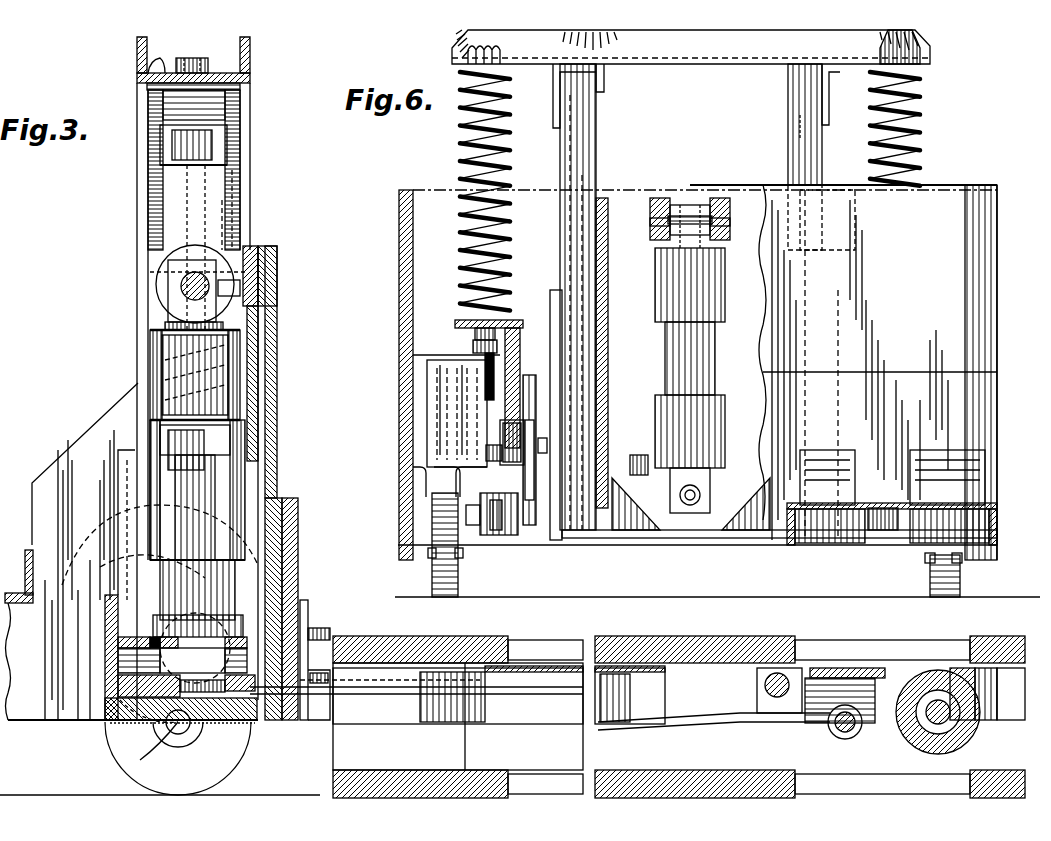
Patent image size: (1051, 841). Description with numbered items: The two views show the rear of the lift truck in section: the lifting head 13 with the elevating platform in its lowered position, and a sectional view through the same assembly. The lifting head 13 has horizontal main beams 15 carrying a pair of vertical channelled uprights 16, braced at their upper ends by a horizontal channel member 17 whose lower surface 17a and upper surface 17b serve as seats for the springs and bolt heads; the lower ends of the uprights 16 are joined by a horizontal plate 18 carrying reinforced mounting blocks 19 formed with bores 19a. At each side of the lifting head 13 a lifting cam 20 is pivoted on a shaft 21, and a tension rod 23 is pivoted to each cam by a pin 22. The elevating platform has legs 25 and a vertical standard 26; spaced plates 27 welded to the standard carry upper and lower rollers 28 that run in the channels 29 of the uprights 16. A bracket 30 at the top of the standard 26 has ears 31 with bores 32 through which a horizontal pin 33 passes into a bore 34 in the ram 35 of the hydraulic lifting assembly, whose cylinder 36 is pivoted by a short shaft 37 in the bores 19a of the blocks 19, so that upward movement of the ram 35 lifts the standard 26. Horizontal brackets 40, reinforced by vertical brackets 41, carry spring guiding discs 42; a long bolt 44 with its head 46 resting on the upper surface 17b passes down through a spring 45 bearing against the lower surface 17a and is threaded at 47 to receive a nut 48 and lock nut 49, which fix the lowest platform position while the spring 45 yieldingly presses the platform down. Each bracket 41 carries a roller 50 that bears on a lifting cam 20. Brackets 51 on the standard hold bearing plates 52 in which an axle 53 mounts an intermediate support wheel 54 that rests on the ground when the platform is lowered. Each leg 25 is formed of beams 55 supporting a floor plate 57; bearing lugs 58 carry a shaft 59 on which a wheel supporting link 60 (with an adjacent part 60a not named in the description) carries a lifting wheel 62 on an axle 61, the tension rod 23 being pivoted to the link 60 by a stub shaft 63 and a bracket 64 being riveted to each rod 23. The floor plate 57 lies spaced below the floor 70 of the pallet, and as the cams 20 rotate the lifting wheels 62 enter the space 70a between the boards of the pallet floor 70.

In FIG. 3, the lifting head 13 is at (22, 722).
In FIG. 6, the lifting head 13 is at (576, 540).
In FIG. 6, the main beams 15 is at (552, 290).
In FIG. 3, the vertical channelled uprights 16 is at (137, 224).
In FIG. 6, the vertical channelled uprights 16 is at (598, 129).
In FIG. 3, the horizontal channel member 17 is at (250, 47).
In FIG. 6, the horizontal channel member 17 is at (722, 55).
In FIG. 3, the lower surface of beam 17a is at (252, 86).
In FIG. 6, the lower surface of beam 17a is at (527, 68).
In FIG. 3, the upper surface of channel beam 17b is at (137, 65).
In FIG. 6, the upper surface of channel beam 17b is at (530, 58).
In FIG. 3, the horizontal plate 18 is at (115, 721).
In FIG. 3, the mounting blocks 19 is at (165, 724).
In FIG. 6, the mounting blocks 19 is at (680, 512).
In FIG. 3, the bores 19a is at (120, 687).
In FIG. 6, the bores 19a is at (700, 512).
In FIG. 3, the lifting cam 20 is at (75, 558).
In FIG. 6, the lifting cam 20 is at (530, 376).
In FIG. 6, the shaft 21 is at (495, 460).
In FIG. 3, the pin 22 is at (308, 625).
In FIG. 6, the pin 22 is at (475, 506).
In FIG. 6, the tension rod 23 is at (508, 534).
In FIG. 6, the legs 25 is at (880, 503).
In FIG. 3, the vertical standard 26 is at (280, 460).
In FIG. 6, the vertical standard 26 is at (894, 245).
In FIG. 3, the spaced plates 27 is at (160, 277).
In FIG. 6, the spaced plates 27 is at (600, 322).
In FIG. 3, the rollers 28 is at (158, 262).
In FIG. 6, the rollers 28 is at (594, 181).
In FIG. 3, the channels 29 is at (238, 196).
In FIG. 6, the channels 29 is at (596, 147).
In FIG. 3, the bracket 30 is at (276, 272).
In FIG. 3, the ears 31 is at (240, 292).
In FIG. 6, the ears 31 is at (660, 198).
In FIG. 6, the bores 32 is at (650, 222).
In FIG. 3, the horizontal pin 33 is at (276, 256).
In FIG. 6, the horizontal pin 33 is at (728, 205).
In FIG. 6, the bore 34 is at (690, 205).
In FIG. 3, the ram 35 is at (230, 262).
In FIG. 6, the ram 35 is at (665, 257).
In FIG. 3, the cylinder 36 is at (250, 440).
In FIG. 6, the cylinder 36 is at (668, 358).
In FIG. 3, the short shaft 37 is at (118, 657).
In FIG. 6, the short shaft 37 is at (690, 515).
In FIG. 3, the horizontal brackets 40 is at (150, 394).
In FIG. 6, the horizontal brackets 40 is at (462, 321).
In FIG. 3, the vertical brackets 41 is at (130, 447).
In FIG. 6, the vertical brackets 41 is at (520, 331).
In FIG. 6, the spring guiding discs 42 is at (515, 318).
In FIG. 3, the long bolt 44 is at (228, 173).
In FIG. 6, the long bolt 44 is at (460, 163).
In FIG. 3, the spring 45 is at (155, 364).
In FIG. 6, the spring 45 is at (460, 131).
In FIG. 3, the head 46 is at (192, 58).
In FIG. 6, the head 46 is at (468, 56).
In FIG. 6, the threaded lower end 47 is at (485, 380).
In FIG. 6, the nut 48 is at (475, 336).
In FIG. 6, the lock nut 49 is at (478, 352).
In FIG. 3, the roller 50 is at (116, 561).
In FIG. 6, the roller 50 is at (512, 436).
In FIG. 6, the brackets 51 is at (420, 479).
In FIG. 3, the bearing plates 52 is at (170, 730).
In FIG. 6, the bearing plates 52 is at (448, 495).
In FIG. 3, the axle 53 is at (140, 760).
In FIG. 3, the intermediate support wheel 54 is at (248, 768).
In FIG. 6, the intermediate support wheel 54 is at (460, 583).
In FIG. 6, the beams 55 is at (662, 706).
In FIG. 6, the floor plate 57 is at (546, 666).
In FIG. 6, the bearing lugs 58 is at (756, 717).
In FIG. 6, the shaft 59 is at (776, 668).
In FIG. 6, the wheel supporting link 60 is at (888, 732).
In FIG. 6, the roller stop 60a is at (975, 668).
In FIG. 6, the axle 61 is at (978, 726).
In FIG. 6, the lifting wheel 62 is at (958, 742).
In FIG. 6, the stub shaft 63 is at (830, 728).
In FIG. 6, the bracket 64 is at (400, 719).
In FIG. 6, the floor of the pallet 70 is at (482, 636).
In FIG. 6, the space 70a is at (805, 774).